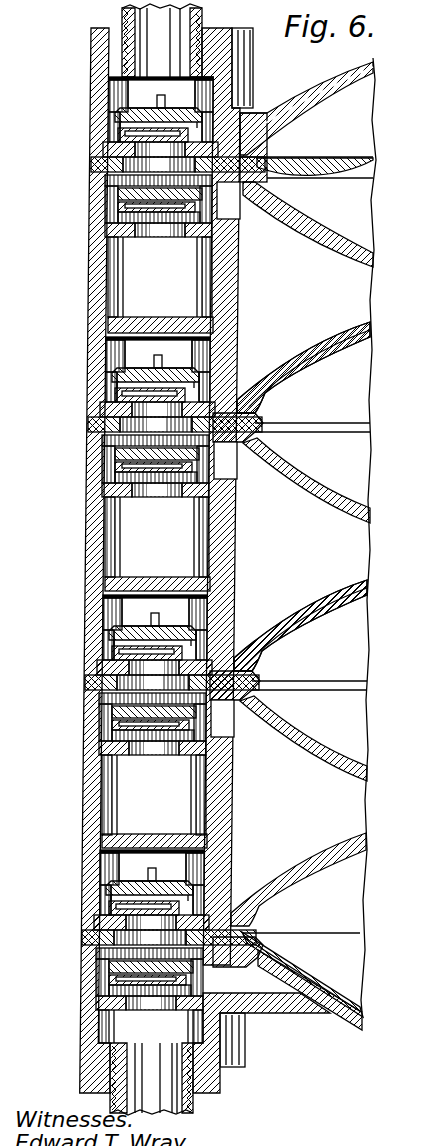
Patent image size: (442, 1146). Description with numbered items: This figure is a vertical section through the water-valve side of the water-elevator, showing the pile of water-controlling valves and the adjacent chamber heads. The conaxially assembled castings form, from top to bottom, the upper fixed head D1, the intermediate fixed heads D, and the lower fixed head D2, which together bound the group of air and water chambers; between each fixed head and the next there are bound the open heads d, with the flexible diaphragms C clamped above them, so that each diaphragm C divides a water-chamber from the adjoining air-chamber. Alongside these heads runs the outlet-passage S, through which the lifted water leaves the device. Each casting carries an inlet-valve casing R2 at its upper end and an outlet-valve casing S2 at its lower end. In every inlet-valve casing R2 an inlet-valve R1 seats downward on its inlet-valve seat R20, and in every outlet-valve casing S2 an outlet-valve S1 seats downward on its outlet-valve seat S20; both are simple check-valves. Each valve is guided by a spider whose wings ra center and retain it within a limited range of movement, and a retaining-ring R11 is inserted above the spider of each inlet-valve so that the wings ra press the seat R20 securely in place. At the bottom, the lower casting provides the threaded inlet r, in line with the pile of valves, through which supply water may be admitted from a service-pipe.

The outlet-passage S is at (137, 20).
The outlet-valve S1 is at (207, 138).
The outlet-valve casing S2 is at (97, 107).
The outlet-valve seat S20 is at (107, 143).
The retaining-ring R11 is at (100, 167).
The inlet-valve R1 is at (110, 213).
The inlet-valve casing R2 is at (100, 200).
The inlet-valve seat R20 is at (112, 240).
The spider wing ra is at (137, 110).
The upper fixed head D1 is at (370, 78).
The fixed head D is at (380, 322).
The lower fixed head D2 is at (365, 1032).
The diaphragm C is at (375, 163).
The open head d is at (383, 255).
The threaded inlet r is at (165, 1068).